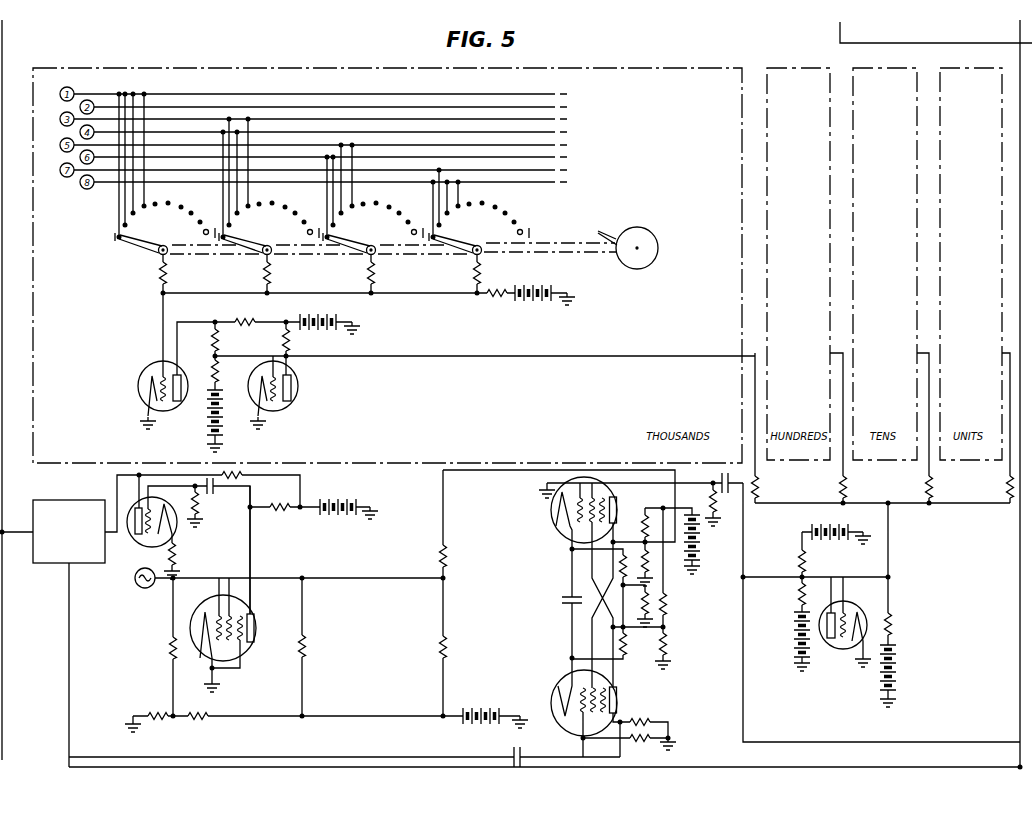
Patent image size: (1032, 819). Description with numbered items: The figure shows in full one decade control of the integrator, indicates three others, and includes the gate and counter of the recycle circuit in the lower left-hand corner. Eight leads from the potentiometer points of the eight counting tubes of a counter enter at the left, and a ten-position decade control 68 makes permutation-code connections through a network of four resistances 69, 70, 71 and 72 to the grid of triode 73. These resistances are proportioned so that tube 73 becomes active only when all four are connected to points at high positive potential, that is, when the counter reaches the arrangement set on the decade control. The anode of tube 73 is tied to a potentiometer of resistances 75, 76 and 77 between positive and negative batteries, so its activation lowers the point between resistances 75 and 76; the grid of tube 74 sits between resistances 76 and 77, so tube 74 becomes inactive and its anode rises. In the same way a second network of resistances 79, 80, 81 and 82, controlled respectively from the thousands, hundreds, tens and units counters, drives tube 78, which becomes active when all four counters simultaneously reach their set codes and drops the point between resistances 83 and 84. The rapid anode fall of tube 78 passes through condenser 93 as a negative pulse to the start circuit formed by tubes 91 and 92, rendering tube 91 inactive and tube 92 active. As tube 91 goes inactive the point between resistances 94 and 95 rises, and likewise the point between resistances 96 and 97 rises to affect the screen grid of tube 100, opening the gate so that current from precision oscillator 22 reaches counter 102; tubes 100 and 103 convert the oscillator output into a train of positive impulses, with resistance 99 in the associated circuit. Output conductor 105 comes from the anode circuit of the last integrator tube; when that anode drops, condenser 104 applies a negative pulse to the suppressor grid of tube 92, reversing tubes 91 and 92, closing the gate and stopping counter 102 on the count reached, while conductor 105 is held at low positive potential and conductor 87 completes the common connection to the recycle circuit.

The precision oscillator 22 is at (140, 588).
The decade control 68 is at (648, 263).
The resistance 69 is at (170, 277).
The resistance 70 is at (274, 277).
The resistance 71 is at (378, 277).
The resistance 72 is at (484, 277).
The triode 73 is at (138, 388).
The tube 74 is at (298, 390).
The resistance 75 is at (245, 319).
The resistance 76 is at (211, 342).
The resistance 77 is at (211, 366).
The tube 78 is at (838, 651).
The resistance 79 is at (762, 485).
The resistance 80 is at (850, 483).
The resistance 81 is at (934, 483).
The resistance 82 is at (1004, 481).
The resistance 83 is at (796, 553).
The resistance 84 is at (796, 588).
The output conductor 87 is at (1018, 560).
The tube 91 is at (552, 515).
The tube 92 is at (556, 681).
The condenser 93 is at (718, 478).
The resistance 94 is at (643, 529).
The resistance 95 is at (657, 566).
The resistance 96 is at (438, 553).
The resistance 97 is at (450, 645).
The resistor 99 is at (297, 645).
The tube 100 is at (247, 655).
The counter 102 is at (55, 500).
The tube 103 is at (147, 546).
The condenser 104 is at (515, 749).
The output conductor 105 is at (3, 600).